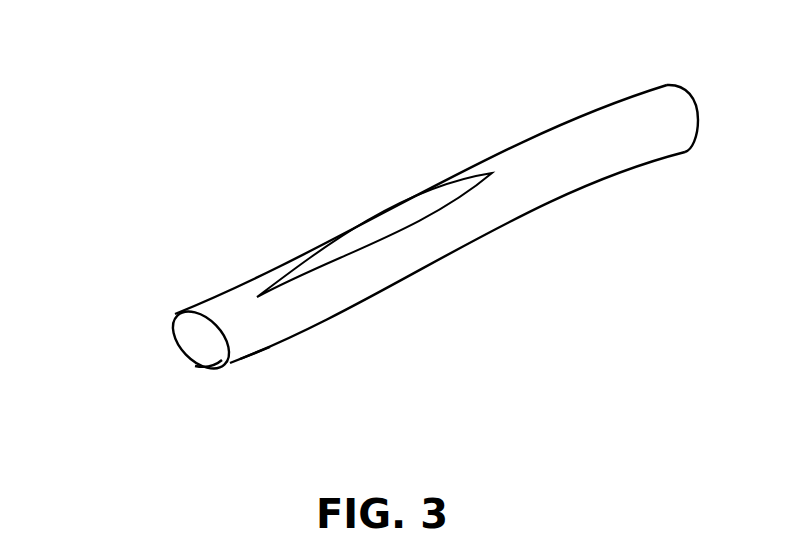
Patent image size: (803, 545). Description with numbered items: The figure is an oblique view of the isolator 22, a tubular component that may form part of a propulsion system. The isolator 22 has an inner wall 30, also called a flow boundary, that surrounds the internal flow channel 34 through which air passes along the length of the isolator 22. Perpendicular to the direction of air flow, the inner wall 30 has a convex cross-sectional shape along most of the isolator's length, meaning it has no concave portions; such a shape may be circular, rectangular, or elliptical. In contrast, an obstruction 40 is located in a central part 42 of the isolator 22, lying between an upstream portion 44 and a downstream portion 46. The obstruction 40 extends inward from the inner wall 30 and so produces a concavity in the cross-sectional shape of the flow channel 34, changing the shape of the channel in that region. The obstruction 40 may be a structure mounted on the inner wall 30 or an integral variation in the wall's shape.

The isolator 22 is at (222, 231).
The inner wall 30 is at (170, 334).
The flow channel 34 is at (178, 378).
The obstruction 40 is at (381, 230).
The central part 42 is at (422, 292).
The upstream portion 44 is at (268, 375).
The downstream portion 46 is at (645, 181).